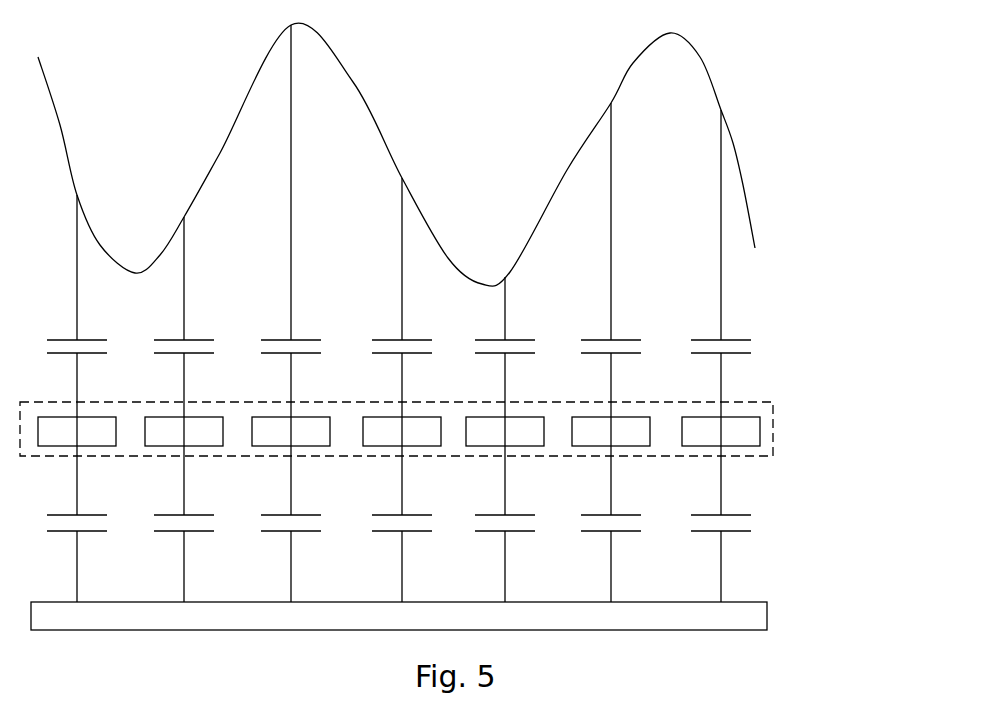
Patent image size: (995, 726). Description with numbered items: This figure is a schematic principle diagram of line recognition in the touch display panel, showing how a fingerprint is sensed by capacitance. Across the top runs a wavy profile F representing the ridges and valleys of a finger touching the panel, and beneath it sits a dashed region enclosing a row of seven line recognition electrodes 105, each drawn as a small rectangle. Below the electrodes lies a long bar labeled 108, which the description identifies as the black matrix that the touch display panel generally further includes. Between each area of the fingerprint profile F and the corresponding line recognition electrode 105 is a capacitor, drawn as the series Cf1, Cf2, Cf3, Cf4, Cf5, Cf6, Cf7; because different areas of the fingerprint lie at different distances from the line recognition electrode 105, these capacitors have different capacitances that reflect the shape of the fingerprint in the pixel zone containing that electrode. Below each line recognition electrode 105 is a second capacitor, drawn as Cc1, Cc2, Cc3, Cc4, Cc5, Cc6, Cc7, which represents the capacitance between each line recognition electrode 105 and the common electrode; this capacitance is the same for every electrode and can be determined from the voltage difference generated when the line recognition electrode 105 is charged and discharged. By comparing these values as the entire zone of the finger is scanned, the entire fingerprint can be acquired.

The electric field distribution F is at (743, 185).
The line recognition electrode 105 is at (773, 428).
The black matrix 108 is at (767, 615).
The capacitor Cfn Cf1 is at (67, 331).
The capacitor Cfn Cf2 is at (174, 331).
The capacitor Cfn Cf3 is at (281, 331).
The capacitor Cfn Cf4 is at (392, 331).
The capacitor Cfn Cf5 is at (495, 331).
The capacitor Cfn Cf6 is at (601, 331).
The capacitor Cfn Cf7 is at (711, 331).
The capacitor Ccn Cc1 is at (67, 506).
The capacitor Ccn Cc2 is at (174, 506).
The capacitor Ccn Cc3 is at (281, 506).
The capacitor Ccn Cc4 is at (392, 506).
The capacitor Ccn Cc5 is at (495, 506).
The capacitor Ccn Cc6 is at (601, 506).
The capacitor Ccn Cc7 is at (711, 506).